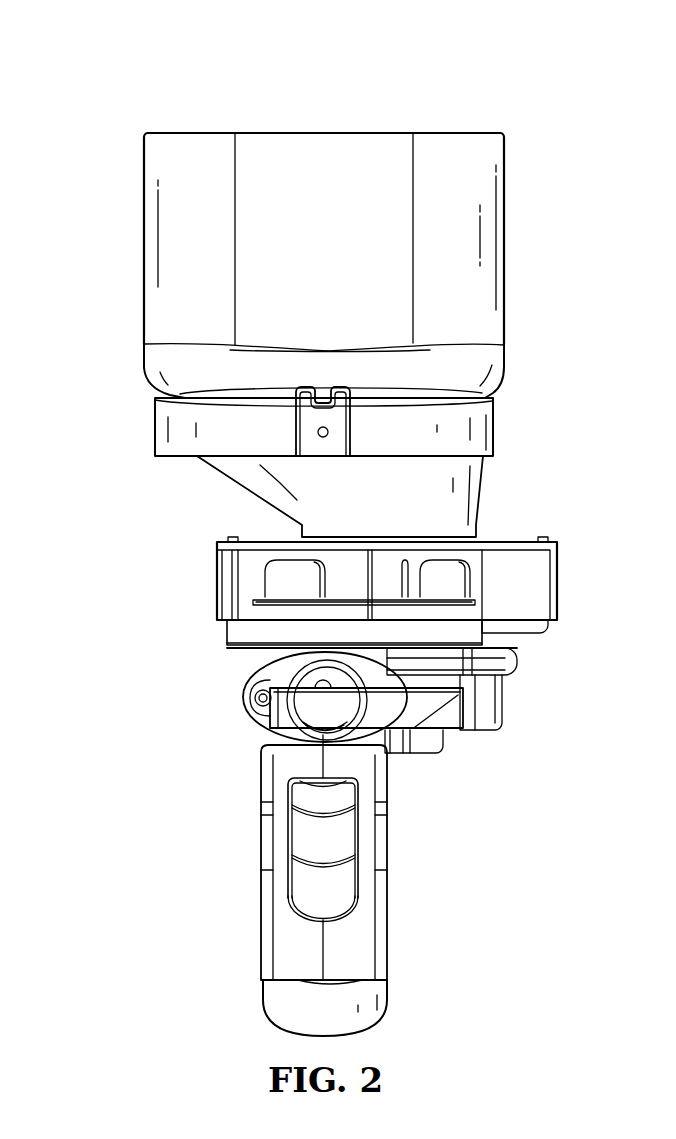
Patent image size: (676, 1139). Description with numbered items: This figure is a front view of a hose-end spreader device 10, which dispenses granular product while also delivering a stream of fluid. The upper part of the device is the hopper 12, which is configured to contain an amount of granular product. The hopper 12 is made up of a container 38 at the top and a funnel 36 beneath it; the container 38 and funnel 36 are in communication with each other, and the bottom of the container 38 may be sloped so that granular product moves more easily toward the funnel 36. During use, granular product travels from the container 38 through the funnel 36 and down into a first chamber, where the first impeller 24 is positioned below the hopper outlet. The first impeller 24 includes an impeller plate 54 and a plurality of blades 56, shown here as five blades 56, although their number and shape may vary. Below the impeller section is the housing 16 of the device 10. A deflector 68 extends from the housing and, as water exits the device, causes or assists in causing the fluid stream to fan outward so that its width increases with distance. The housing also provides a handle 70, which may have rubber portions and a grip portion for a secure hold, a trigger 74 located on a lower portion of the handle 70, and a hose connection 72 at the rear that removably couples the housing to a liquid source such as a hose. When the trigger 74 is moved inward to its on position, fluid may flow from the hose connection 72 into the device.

The hose-end spreader device 10 is at (90, 66).
The hopper 12 is at (136, 232).
The container 38 is at (504, 283).
The funnel 36 is at (483, 490).
The first impeller 24 is at (246, 586).
The blades 56 is at (440, 578).
The impeller plate 54 is at (450, 612).
The housing 16 is at (252, 742).
The deflector 68 is at (283, 710).
The handle 70 is at (261, 898).
The trigger 74 is at (333, 903).
The hose connection 72 is at (270, 1015).